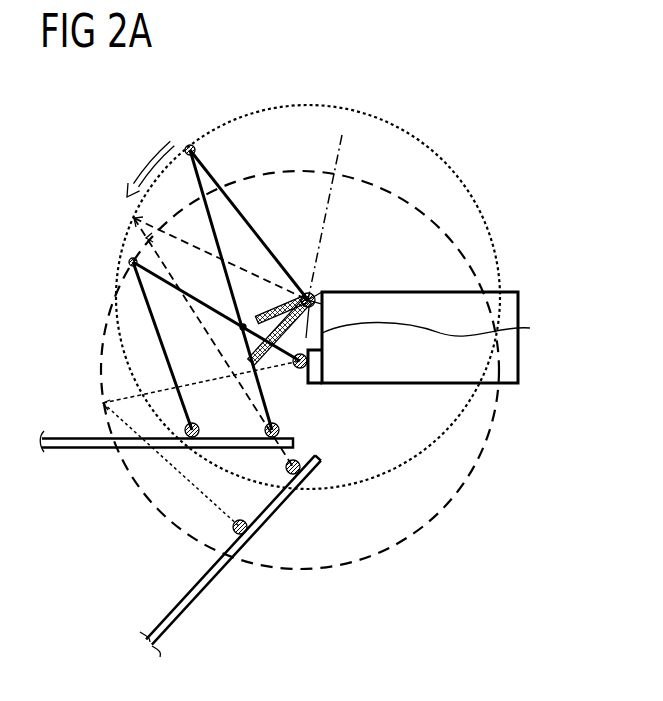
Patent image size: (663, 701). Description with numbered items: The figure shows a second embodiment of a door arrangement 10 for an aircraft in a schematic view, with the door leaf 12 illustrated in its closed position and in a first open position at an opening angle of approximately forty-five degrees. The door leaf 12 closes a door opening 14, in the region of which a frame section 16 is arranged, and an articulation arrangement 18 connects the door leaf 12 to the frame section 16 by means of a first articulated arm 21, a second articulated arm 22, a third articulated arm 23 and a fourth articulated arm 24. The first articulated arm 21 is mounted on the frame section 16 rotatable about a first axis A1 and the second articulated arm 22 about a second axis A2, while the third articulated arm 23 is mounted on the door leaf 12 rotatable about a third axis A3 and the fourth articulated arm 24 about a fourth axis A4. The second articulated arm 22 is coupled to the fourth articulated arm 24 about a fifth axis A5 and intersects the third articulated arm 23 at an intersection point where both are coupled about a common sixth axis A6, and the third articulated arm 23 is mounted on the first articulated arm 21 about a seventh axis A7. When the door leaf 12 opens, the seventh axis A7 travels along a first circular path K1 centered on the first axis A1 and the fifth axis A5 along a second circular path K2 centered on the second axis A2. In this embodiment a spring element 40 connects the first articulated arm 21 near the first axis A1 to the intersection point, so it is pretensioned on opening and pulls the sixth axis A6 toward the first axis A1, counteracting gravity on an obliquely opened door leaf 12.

The door arrangement 10 is at (416, 94).
The door leaf 12 is at (74, 450).
The door opening 14 is at (440, 329).
The frame section 16 is at (501, 291).
The articulation arrangement 18 is at (306, 188).
The first articulated arm 21 is at (223, 177).
The second articulated arm 22 is at (150, 268).
The third articulated arm 23 is at (173, 143).
The fourth articulated arm 24 is at (152, 323).
The spring element 40 is at (258, 318).
The first circular path K1 is at (303, 106).
The second circular path K2 is at (327, 570).
The first axis A1 is at (312, 294).
The second axis A2 is at (303, 366).
The third axis A3 is at (266, 432).
The fourth axis A4 is at (185, 432).
The fifth axis A5 is at (128, 263).
The sixth axis A6 is at (240, 328).
The seventh axis A7 is at (190, 147).